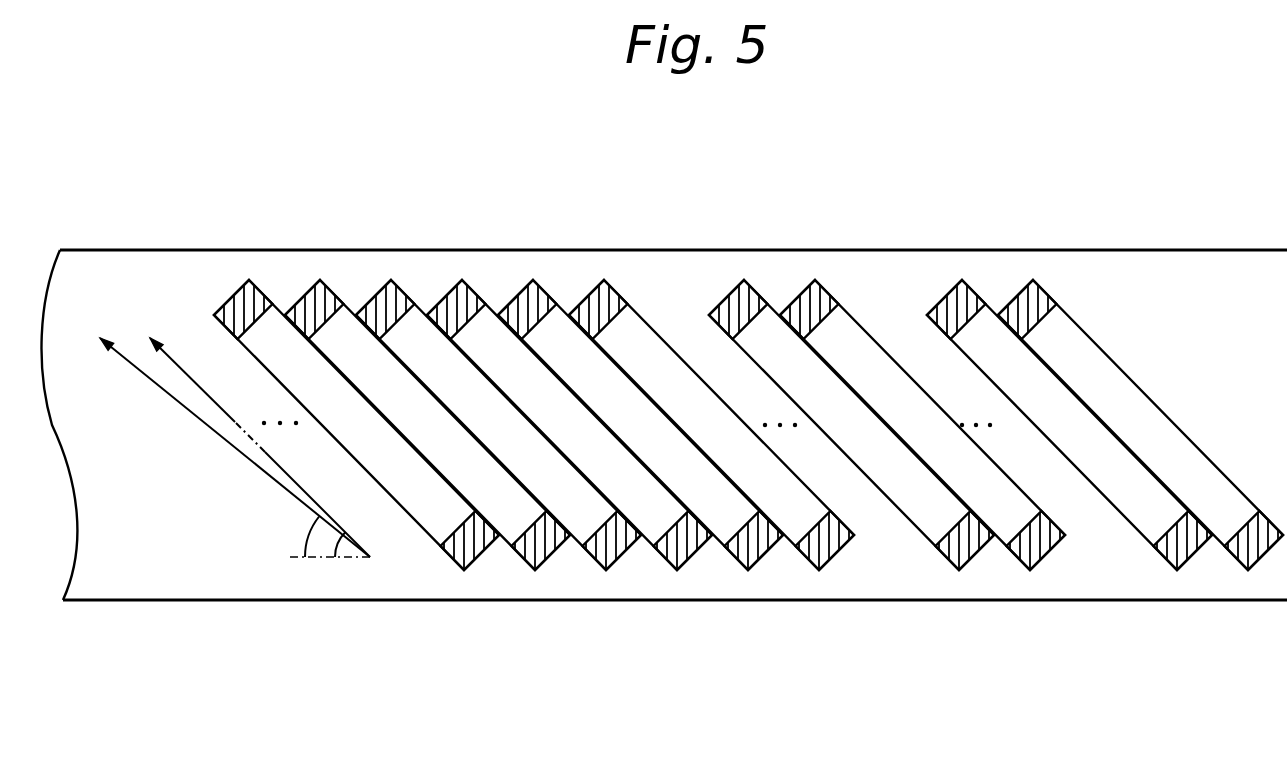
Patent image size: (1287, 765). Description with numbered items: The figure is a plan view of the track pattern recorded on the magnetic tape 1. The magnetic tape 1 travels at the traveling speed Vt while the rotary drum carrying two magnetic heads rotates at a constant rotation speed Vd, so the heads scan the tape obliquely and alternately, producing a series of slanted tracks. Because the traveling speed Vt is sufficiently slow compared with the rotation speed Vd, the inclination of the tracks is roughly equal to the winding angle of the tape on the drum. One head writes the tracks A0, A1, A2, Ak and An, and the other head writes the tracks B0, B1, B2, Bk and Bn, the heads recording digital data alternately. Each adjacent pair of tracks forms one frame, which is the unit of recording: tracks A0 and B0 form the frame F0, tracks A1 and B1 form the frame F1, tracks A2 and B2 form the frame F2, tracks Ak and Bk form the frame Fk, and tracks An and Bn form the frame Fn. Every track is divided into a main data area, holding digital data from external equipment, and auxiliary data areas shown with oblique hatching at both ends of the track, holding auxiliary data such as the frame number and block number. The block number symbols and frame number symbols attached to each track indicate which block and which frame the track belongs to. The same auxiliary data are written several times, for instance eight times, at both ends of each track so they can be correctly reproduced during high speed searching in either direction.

The magnetic tape 1 is at (915, 265).
The track A0 is at (430, 523).
The track B0 is at (501, 523).
The track A1 is at (572, 523).
The track B1 is at (643, 523).
The track A2 is at (714, 523).
The track B2 is at (785, 523).
The track Ak is at (925, 523).
The track Bk is at (996, 523).
The track An is at (1143, 523).
The track Bn is at (1214, 523).
The frame F0 is at (392, 503).
The frame F1 is at (534, 503).
The frame F2 is at (676, 503).
The frame Fk is at (887, 503).
The frame Fn is at (1105, 503).
The traveling speed Vt is at (104, 338).
The rotation speed Vd is at (224, 444).